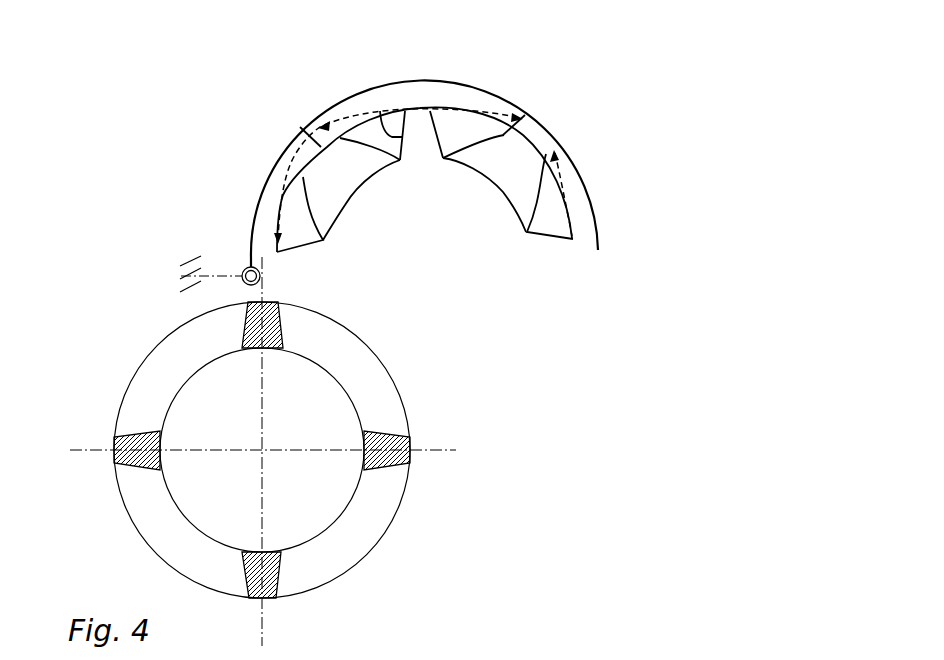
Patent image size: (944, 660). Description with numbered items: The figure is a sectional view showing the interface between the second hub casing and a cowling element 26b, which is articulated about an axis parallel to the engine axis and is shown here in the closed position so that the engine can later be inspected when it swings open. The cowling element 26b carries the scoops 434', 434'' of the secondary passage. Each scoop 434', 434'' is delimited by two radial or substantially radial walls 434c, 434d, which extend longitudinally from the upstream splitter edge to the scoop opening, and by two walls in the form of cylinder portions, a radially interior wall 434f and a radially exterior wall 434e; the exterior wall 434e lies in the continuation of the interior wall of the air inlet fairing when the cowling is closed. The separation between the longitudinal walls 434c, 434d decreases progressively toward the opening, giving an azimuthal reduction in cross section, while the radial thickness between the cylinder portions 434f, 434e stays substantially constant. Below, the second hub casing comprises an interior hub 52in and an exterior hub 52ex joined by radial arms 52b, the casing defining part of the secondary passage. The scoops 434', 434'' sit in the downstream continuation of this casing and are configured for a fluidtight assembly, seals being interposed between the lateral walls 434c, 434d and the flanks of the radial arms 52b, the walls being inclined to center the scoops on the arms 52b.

The cowling element 26b is at (451, 86).
The radial wall 434c is at (381, 109).
The radially exterior wall 434e is at (301, 128).
The scoop 434' is at (270, 184).
The scoop 434'' is at (553, 168).
The radial wall 434d is at (281, 222).
The radially interior wall 434f is at (343, 197).
The radial arms 52b is at (242, 340).
The interior hub 52in is at (348, 507).
The exterior hub 52ex is at (362, 562).